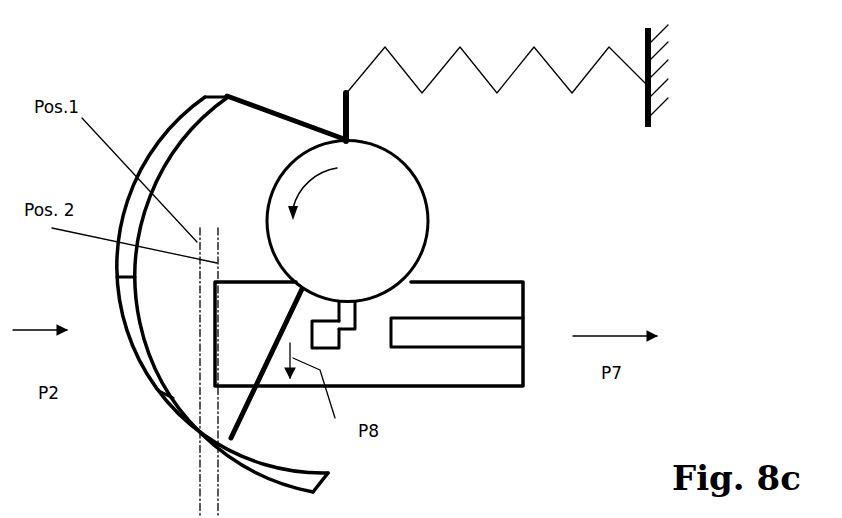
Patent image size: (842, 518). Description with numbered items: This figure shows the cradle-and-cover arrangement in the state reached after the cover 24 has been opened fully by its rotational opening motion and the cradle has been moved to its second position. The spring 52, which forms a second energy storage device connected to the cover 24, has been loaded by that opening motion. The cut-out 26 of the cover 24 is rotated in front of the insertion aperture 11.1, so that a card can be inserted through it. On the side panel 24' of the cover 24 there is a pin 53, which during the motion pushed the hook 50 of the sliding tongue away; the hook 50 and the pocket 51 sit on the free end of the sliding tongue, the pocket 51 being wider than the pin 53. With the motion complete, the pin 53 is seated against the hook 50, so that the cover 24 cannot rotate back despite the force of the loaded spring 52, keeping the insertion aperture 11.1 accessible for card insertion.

The cover 24 is at (239, 255).
The side panel 24' is at (390, 197).
The cut-out 26 is at (123, 303).
The spring 52 is at (523, 61).
The pin 53 is at (353, 318).
The hook 50 is at (325, 338).
The pocket 51 is at (382, 335).
The insertion aperture 11.1 is at (203, 348).